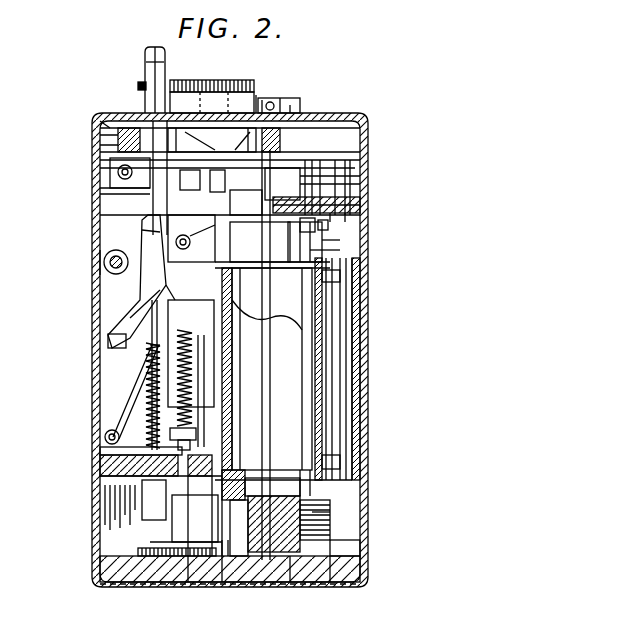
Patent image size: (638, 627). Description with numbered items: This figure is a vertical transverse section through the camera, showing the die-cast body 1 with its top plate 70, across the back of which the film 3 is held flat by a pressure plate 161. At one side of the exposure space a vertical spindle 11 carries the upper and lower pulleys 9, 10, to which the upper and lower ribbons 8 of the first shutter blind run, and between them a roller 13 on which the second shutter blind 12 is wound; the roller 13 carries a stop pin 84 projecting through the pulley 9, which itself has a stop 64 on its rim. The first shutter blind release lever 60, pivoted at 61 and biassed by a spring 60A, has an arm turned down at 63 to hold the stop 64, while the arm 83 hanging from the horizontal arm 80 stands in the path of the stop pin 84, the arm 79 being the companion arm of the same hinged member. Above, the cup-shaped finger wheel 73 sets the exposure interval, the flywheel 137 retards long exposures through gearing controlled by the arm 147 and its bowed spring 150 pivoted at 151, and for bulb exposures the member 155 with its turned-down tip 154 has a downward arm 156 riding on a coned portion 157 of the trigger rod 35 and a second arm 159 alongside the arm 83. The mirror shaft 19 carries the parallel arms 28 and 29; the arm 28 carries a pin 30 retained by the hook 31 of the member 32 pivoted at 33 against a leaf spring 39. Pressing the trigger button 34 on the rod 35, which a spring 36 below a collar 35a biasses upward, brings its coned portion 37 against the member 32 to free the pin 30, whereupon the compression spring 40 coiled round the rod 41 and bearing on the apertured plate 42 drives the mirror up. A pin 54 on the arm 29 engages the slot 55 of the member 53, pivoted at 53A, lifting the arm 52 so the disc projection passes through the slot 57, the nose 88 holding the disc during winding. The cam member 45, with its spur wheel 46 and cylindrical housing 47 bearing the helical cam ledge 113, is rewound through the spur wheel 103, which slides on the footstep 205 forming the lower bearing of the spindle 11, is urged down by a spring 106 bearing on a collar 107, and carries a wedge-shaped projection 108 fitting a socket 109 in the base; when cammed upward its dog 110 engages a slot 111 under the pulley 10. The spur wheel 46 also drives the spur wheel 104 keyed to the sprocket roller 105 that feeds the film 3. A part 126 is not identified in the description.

The die-cast body 1 is at (358, 408).
The film 3 is at (345, 425).
The upper and lower ribbons 8 is at (312, 251).
The upper pulley 9 is at (310, 243).
The lower pulley 10 is at (300, 492).
The vertical spindle 11 is at (320, 370).
The second shutter blind 12 is at (340, 312).
The roller 13 is at (320, 384).
The shaft 19 is at (110, 258).
The arm 28 is at (140, 272).
The arm 29 is at (135, 245).
The pin 30 is at (240, 278).
The hook 31 is at (150, 290).
The member 32 is at (130, 412).
The pivot 33 is at (108, 442).
The trigger button 34 is at (163, 62).
The trigger rod 35 is at (145, 352).
The collar 35a is at (140, 362).
The spring 36 is at (100, 450).
The coned portion 37 is at (110, 340).
The leaf spring 39 is at (146, 397).
The compression spring 40 is at (250, 403).
The rod 41 is at (255, 352).
The apertured plate 42 is at (250, 424).
The cam member 45 is at (248, 376).
The spur wheel 46 is at (148, 556).
The cylindrical housing 47 is at (245, 310).
The arm 52 is at (128, 128).
The member 53 is at (118, 160).
The pivot 53A is at (112, 172).
The pin 54 is at (105, 270).
The slot 55 is at (140, 300).
The slot 57 is at (212, 248).
The first shutter blind release lever 60 is at (345, 190).
The spring 60A is at (320, 205).
The pivot 61 is at (355, 222).
The turned-down arm end 63 is at (330, 214).
The stop 64 is at (290, 258).
The top plate 70 is at (290, 115).
The cup-shaped finger wheel 73 is at (235, 135).
The arm 79 is at (105, 122).
The arm 80 is at (265, 115).
The arm 83 is at (345, 158).
The stop pin 84 is at (316, 226).
The nose 88 is at (242, 118).
The spur wheel 103 is at (330, 583).
The spur wheel 104 is at (345, 572).
The sprocket roller 105 is at (322, 276).
The spring 106 is at (320, 544).
The collar 107 is at (335, 482).
The wedge-shaped projection 108 is at (288, 582).
The socket 109 is at (272, 583).
The dog 110 is at (340, 560).
The slot 111 is at (312, 524).
The helical cam ledge 113 is at (272, 248).
The screw 126 is at (272, 100).
The flywheel 137 is at (350, 125).
The arm 147 is at (335, 178).
The bowed spring 150 is at (340, 165).
The pivot 151 is at (318, 143).
The turned-down tip 154 is at (205, 95).
The member 155 is at (157, 118).
The downwardly extending arm 156 is at (118, 135).
The coned portion 157 is at (112, 188).
The second downwardly extending arm 159 is at (290, 145).
The pressure plate 161 is at (338, 345).
The footstep 205 is at (228, 583).